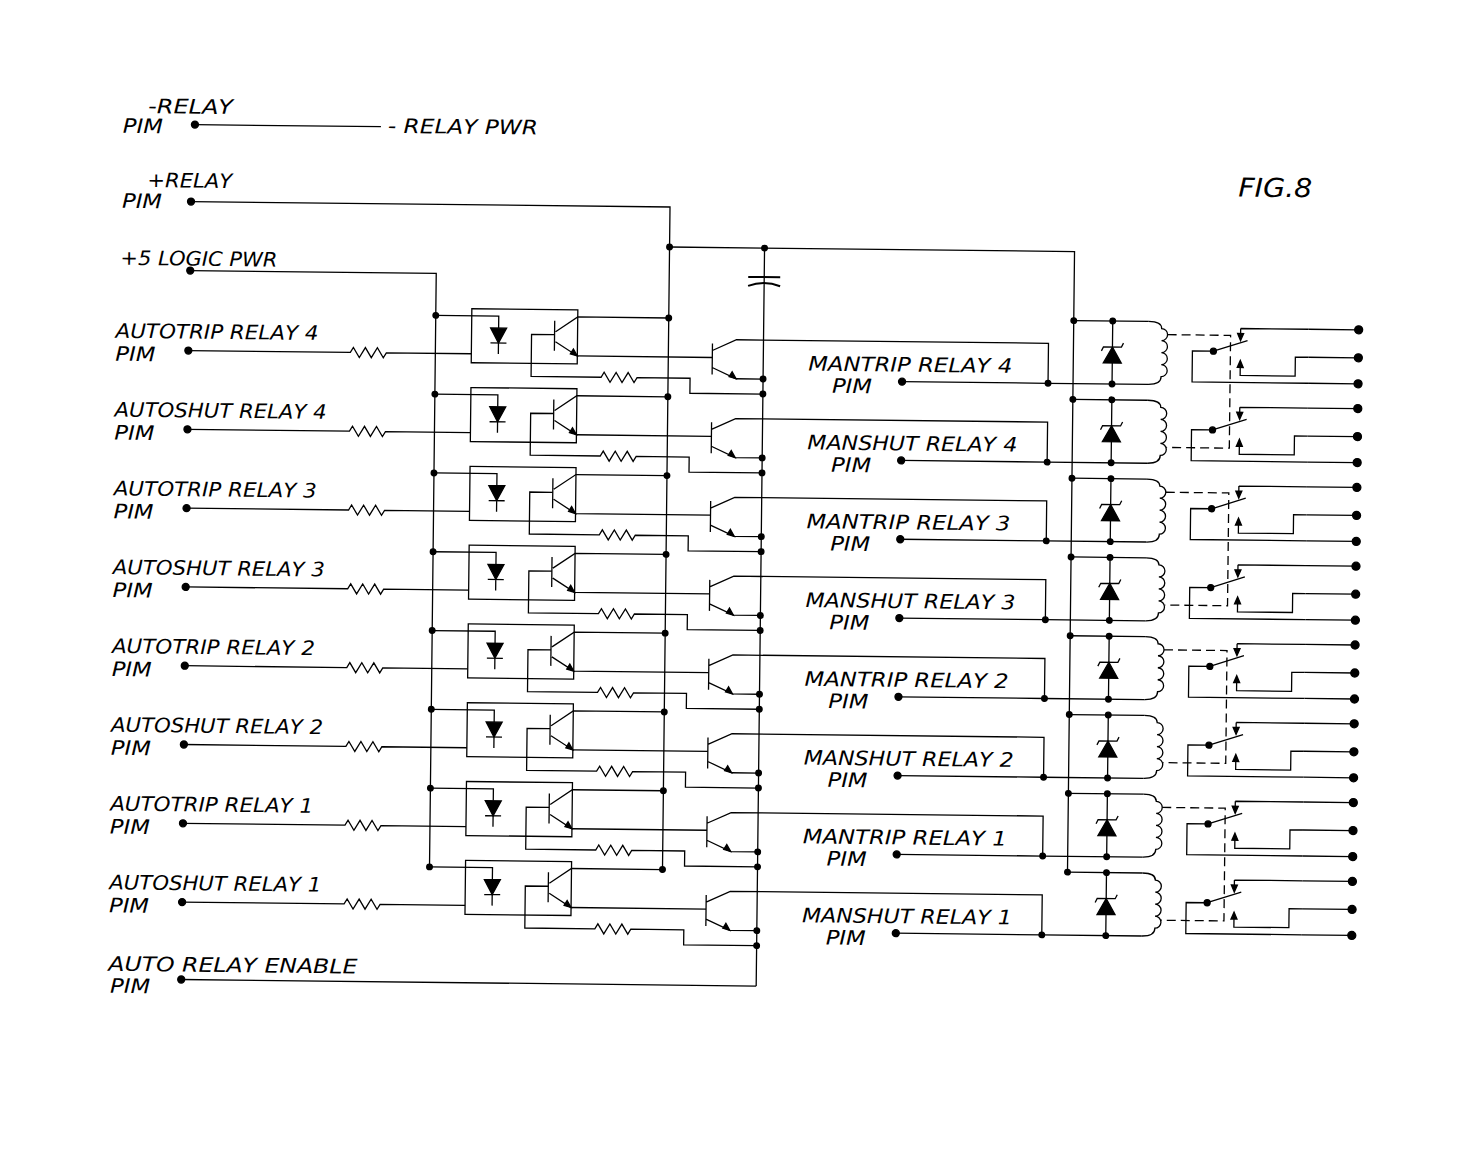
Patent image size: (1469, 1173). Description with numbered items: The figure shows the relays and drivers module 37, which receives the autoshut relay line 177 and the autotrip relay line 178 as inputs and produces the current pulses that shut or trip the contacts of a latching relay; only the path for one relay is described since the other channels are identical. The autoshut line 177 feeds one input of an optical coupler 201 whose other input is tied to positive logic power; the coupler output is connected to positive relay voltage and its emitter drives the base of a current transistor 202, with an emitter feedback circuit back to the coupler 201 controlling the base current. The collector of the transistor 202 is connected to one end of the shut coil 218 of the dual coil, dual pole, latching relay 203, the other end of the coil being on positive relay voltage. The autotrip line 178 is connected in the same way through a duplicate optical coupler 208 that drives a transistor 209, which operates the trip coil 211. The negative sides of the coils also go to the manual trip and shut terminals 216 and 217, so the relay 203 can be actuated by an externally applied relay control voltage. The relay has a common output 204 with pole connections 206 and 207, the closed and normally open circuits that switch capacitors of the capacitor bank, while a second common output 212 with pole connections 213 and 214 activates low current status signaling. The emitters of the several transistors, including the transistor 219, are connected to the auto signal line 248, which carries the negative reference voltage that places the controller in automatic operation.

The relays and drivers module 37 is at (842, 208).
The autotrip relay line 178 is at (322, 836).
The autoshut relay line 177 is at (321, 918).
The auto signal line 248 is at (268, 985).
The optical coupler 208 is at (568, 824).
The optical coupler 201 is at (581, 904).
The transistor 209 is at (856, 828).
The current transistor 202 is at (842, 907).
The driver transistor (trip relay 2) 219 is at (856, 670).
The manual relay trip terminal 216 is at (969, 869).
The manual relay shut terminal 217 is at (968, 953).
The trip coil 211 is at (1128, 839).
The shut coil 218 is at (1101, 923).
The dual coil, dual pole, latching relay 203 is at (1193, 892).
The pole connection 213 is at (1366, 793).
The pole connection 214 is at (1367, 820).
The common output 212 is at (1366, 846).
The pole connection 206 is at (1365, 874).
The pole connection 207 is at (1366, 901).
The common output 204 is at (1365, 926).